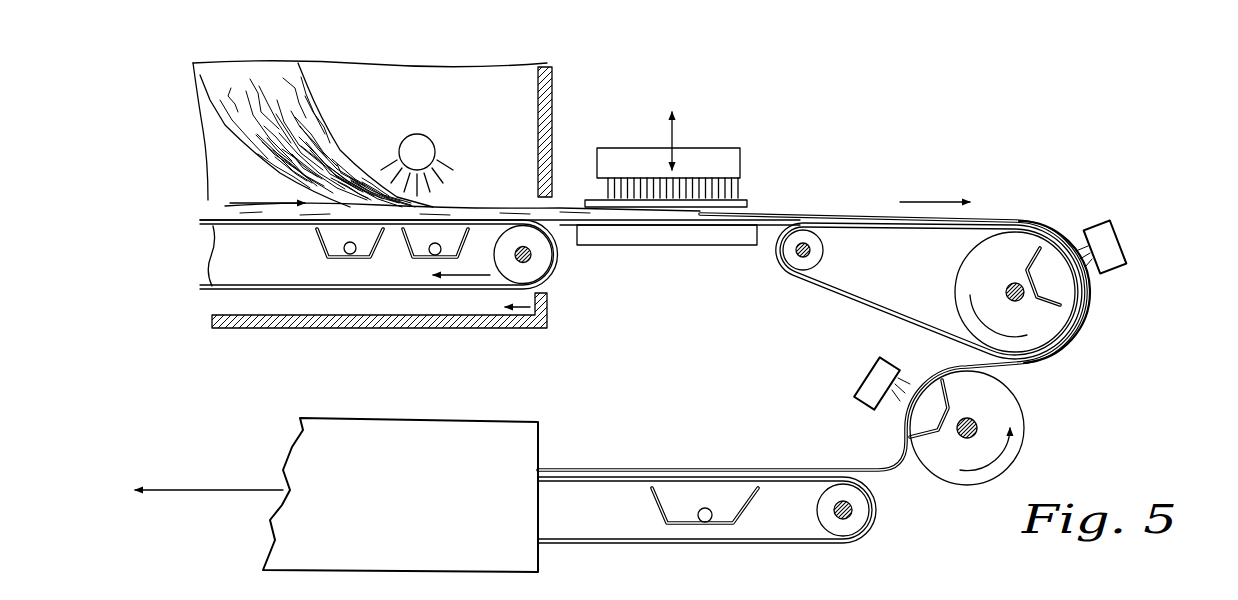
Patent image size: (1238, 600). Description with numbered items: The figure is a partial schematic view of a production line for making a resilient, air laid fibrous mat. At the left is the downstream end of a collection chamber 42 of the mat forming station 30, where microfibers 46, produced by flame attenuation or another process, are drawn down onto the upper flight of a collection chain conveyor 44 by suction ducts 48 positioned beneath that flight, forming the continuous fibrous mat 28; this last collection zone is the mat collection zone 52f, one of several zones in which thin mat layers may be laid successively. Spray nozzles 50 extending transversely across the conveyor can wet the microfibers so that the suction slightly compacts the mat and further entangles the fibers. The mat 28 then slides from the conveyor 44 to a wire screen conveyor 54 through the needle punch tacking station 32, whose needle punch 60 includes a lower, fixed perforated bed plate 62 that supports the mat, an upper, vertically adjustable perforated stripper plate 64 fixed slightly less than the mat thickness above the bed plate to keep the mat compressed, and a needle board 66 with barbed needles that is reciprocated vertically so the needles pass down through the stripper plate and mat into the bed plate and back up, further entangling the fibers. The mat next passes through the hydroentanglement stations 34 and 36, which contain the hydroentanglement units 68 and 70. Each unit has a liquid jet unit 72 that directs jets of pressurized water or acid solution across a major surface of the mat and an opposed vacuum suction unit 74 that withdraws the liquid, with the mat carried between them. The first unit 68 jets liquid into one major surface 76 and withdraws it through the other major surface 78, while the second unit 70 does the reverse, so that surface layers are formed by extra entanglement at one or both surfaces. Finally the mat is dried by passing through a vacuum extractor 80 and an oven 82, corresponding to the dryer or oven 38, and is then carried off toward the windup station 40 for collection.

The fibrous mat 28 is at (447, 207).
The mat forming station 30 is at (562, 82).
The needle punch tacking station 32 is at (688, 181).
The hydroentanglement station 34 is at (1135, 174).
The hydroentanglement station 36 is at (1052, 427).
The dryer or oven 38 is at (736, 550).
The windup station 40 is at (209, 465).
The collection chamber 42 is at (553, 130).
The collection chain conveyor 44 is at (282, 279).
The microfibers 46 is at (322, 108).
The suction ducts 48 is at (401, 237).
The spray nozzles 50 is at (428, 122).
The mat collection zone 52f is at (550, 306).
The wire screen conveyor 54 is at (863, 293).
The needle punch 60 is at (606, 188).
The bed plate 62 is at (742, 195).
The stripper plate 64 is at (750, 206).
The needle board 66 is at (690, 160).
The hydroentanglement unit 68 is at (1024, 395).
The hydroentanglement unit 70 is at (1042, 319).
The liquid jet unit 72 is at (1113, 244).
The vacuum suction unit 74 is at (1024, 270).
The major surface 76 is at (1037, 217).
The major surface 78 is at (888, 452).
The vacuum extractor 80 is at (657, 513).
The oven 82 is at (538, 551).